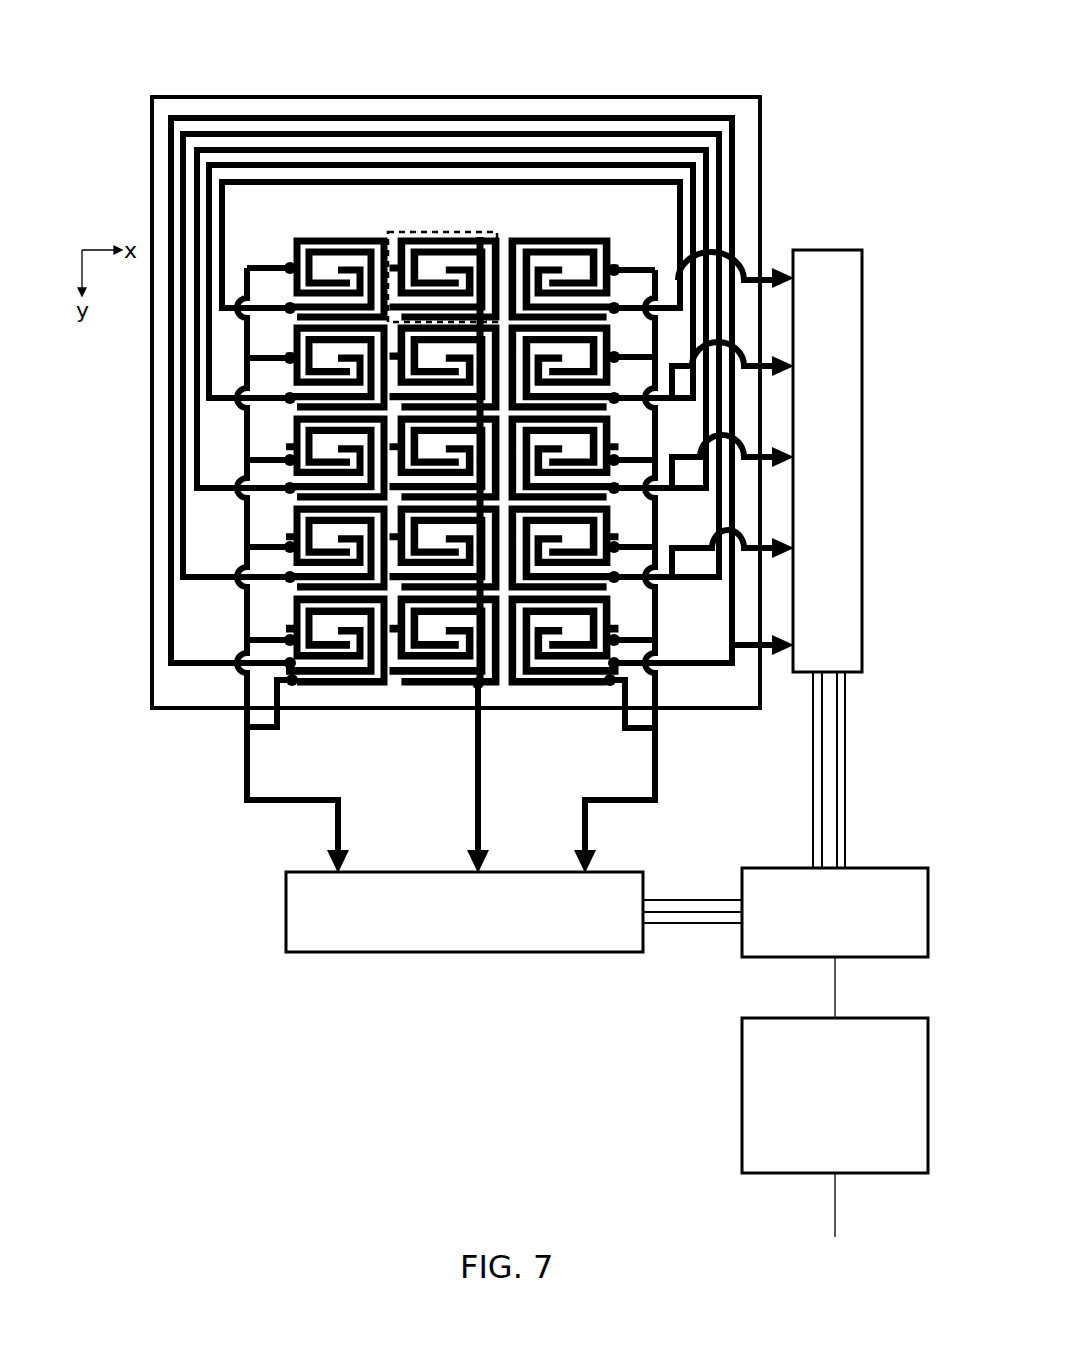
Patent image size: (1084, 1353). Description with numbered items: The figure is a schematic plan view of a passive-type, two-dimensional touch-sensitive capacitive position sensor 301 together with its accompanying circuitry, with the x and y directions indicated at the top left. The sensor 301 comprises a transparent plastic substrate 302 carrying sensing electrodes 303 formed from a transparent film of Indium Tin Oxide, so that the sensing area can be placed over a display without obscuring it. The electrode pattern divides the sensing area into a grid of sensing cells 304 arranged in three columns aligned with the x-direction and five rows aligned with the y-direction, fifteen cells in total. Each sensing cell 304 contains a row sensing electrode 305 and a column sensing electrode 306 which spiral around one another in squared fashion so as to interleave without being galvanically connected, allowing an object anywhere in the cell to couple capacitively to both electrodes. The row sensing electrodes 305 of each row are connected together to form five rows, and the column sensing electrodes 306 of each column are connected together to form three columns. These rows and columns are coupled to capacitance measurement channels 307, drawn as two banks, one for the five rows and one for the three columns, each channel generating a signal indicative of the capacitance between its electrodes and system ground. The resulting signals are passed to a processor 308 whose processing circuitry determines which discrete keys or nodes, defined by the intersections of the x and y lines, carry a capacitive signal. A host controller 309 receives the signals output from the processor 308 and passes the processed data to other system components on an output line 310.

The 2D touch-sensitive capacitive position sensor 301 is at (694, 73).
The substrate 302 is at (183, 696).
The sensing electrodes 303 is at (429, 404).
The sensing cells 304 is at (437, 232).
The row sensing electrode 305 is at (394, 168).
The column sensing electrode 306 is at (417, 243).
The capacitance measurement channels 307 is at (866, 324).
The processor 308 is at (868, 868).
The host controller 309 is at (742, 1102).
The output line 310 is at (832, 1197).